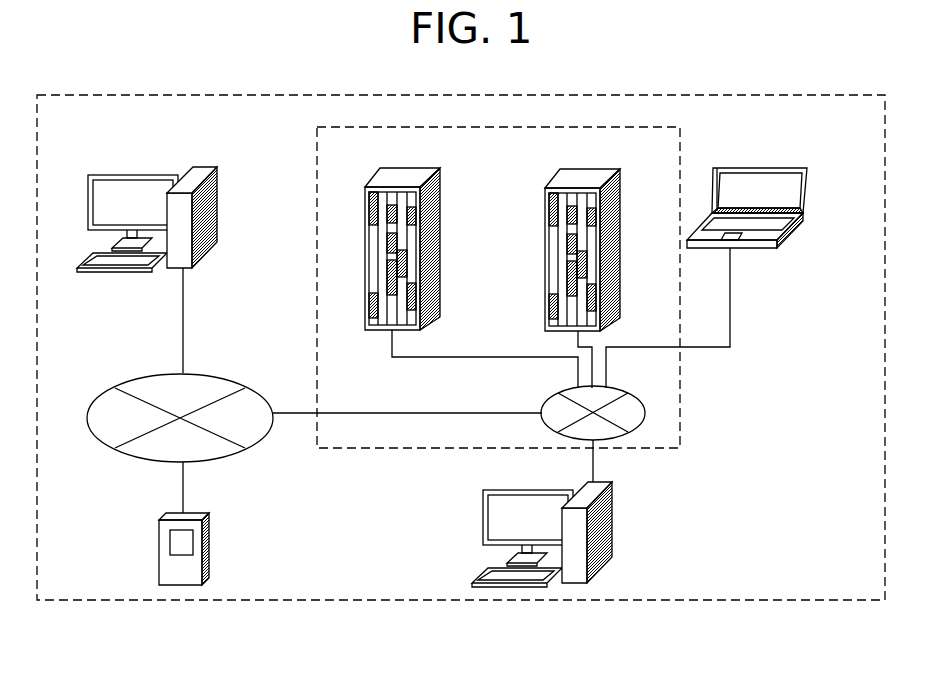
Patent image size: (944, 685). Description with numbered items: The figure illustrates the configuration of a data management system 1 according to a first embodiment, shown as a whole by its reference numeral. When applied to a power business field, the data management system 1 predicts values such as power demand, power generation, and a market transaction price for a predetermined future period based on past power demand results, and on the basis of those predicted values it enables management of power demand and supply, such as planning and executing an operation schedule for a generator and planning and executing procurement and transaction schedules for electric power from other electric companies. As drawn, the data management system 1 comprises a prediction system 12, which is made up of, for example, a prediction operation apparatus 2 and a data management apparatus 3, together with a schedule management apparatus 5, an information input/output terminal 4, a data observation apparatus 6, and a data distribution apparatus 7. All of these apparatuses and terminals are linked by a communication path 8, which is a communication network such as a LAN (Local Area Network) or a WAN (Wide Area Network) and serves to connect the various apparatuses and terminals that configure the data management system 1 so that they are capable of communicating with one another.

The data management system 1 is at (861, 580).
The prediction operation apparatus 2 is at (440, 212).
The data management apparatus 3 is at (620, 212).
The information input/output terminal 4 is at (806, 210).
The schedule management apparatus 5 is at (612, 523).
The data observation apparatus 6 is at (209, 545).
The data distribution apparatus 7 is at (215, 208).
The communication path 8 is at (258, 394).
The prediction system 12 is at (362, 160).